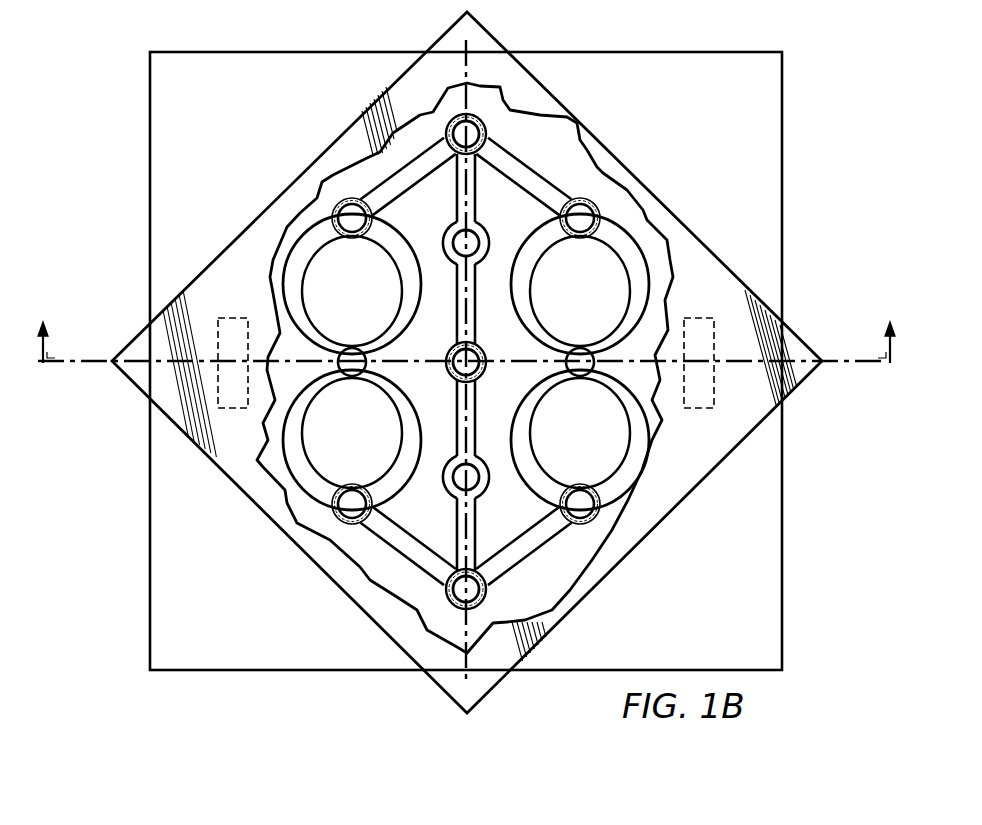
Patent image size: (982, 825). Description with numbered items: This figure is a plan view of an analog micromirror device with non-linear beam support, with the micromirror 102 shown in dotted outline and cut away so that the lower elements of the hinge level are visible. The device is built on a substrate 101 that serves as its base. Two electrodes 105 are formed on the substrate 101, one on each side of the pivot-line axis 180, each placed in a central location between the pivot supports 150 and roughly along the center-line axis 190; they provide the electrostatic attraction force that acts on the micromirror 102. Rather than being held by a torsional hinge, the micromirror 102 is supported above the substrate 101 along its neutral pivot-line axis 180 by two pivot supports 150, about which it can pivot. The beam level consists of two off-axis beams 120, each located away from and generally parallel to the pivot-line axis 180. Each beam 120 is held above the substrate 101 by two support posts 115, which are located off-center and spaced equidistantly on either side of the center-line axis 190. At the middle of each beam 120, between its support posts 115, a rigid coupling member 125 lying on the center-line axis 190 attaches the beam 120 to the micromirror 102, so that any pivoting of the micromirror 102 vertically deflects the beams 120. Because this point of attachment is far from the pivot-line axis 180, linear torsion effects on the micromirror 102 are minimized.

The substrate 101 is at (700, 629).
The micromirror 102 is at (333, 143).
The electrode 105 is at (233, 318).
The support post 115 is at (334, 210).
The off-axis beam 120 is at (292, 428).
The rigid coupling member 125 is at (352, 348).
The pivot support 150 is at (452, 243).
The pivot-line axis 180 is at (470, 62).
The center-line axis 190 is at (90, 360).